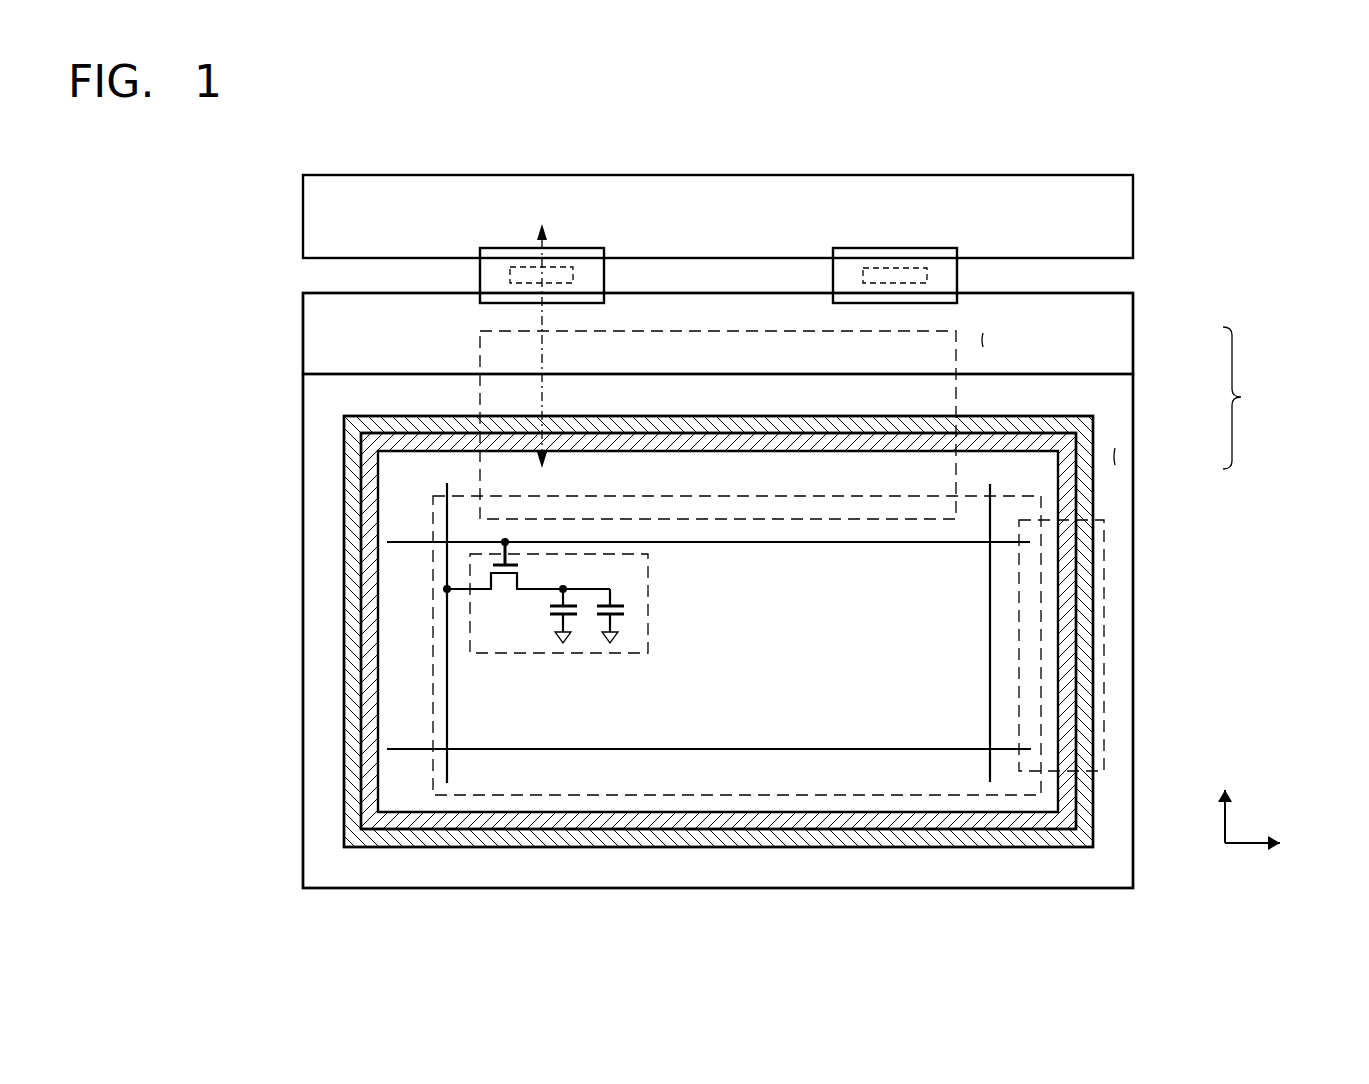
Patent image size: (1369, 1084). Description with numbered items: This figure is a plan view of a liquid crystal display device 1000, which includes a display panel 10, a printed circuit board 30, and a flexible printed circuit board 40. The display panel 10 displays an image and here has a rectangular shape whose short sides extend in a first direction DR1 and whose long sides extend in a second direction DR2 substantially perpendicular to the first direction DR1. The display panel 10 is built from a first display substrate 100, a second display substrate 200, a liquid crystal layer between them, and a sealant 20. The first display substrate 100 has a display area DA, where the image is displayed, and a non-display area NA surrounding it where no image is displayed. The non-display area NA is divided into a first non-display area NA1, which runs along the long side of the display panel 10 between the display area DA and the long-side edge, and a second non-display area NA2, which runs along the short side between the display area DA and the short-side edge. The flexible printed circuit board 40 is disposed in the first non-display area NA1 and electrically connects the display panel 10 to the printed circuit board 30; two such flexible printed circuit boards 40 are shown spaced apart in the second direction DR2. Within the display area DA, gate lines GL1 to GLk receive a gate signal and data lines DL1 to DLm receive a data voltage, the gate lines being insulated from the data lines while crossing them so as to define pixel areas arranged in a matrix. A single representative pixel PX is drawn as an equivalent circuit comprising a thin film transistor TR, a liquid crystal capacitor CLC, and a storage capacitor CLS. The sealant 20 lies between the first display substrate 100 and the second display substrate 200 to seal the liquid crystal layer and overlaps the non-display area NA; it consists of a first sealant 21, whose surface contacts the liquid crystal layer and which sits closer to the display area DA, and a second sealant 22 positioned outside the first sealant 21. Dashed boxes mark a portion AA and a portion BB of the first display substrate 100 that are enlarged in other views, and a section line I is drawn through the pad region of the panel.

The liquid crystal display device 1000 is at (1108, 130).
The display panel 10 is at (203, 323).
The first display substrate 100 is at (303, 331).
The second display substrate 200 is at (303, 424).
The sealant 20 is at (218, 562).
The first sealant 21 is at (370, 665).
The second sealant 22 is at (349, 568).
The printed circuit board 30 is at (1134, 212).
The flexible printed circuit board 40 is at (923, 243).
The portion AA is at (956, 355).
The non-display area NA is at (1247, 398).
The first non-display area NA1 is at (983, 340).
The second non-display area NA2 is at (1115, 457).
The display area DA is at (522, 795).
The portion BB is at (1104, 568).
The pixel PX is at (584, 624).
The thin film transistor TR is at (504, 600).
The liquid crystal capacitor CLC is at (575, 628).
The storage capacitor CLS is at (623, 628).
The first data line DL1 is at (446, 620).
The m-th data line DLm is at (989, 619).
The first gate line GL1 is at (708, 529).
The k-th gate line GLk is at (709, 734).
The first direction DR1 is at (1225, 795).
The second direction DR2 is at (1280, 844).
The section line I-I' I is at (544, 347).